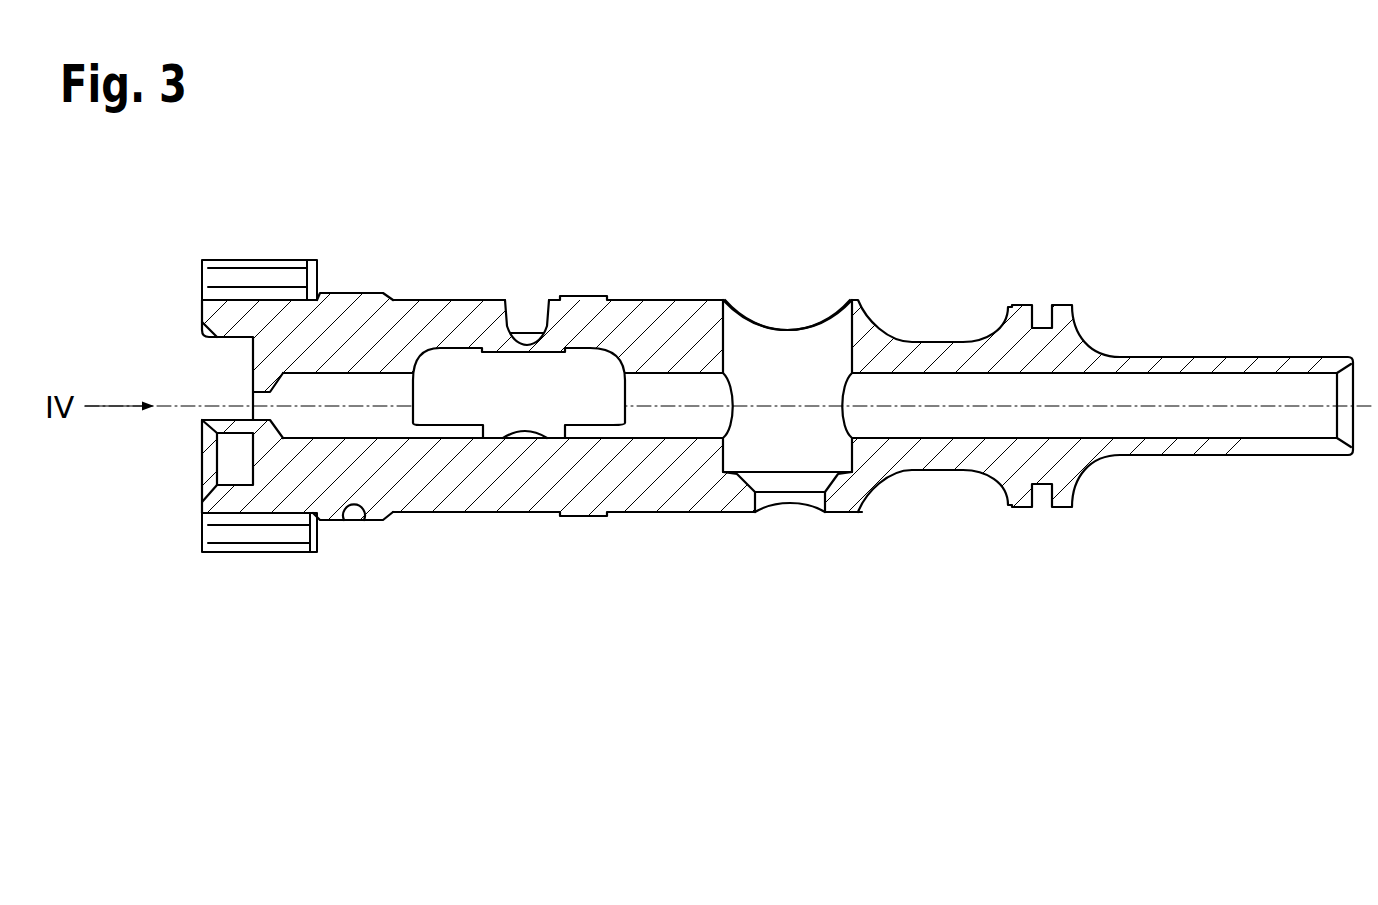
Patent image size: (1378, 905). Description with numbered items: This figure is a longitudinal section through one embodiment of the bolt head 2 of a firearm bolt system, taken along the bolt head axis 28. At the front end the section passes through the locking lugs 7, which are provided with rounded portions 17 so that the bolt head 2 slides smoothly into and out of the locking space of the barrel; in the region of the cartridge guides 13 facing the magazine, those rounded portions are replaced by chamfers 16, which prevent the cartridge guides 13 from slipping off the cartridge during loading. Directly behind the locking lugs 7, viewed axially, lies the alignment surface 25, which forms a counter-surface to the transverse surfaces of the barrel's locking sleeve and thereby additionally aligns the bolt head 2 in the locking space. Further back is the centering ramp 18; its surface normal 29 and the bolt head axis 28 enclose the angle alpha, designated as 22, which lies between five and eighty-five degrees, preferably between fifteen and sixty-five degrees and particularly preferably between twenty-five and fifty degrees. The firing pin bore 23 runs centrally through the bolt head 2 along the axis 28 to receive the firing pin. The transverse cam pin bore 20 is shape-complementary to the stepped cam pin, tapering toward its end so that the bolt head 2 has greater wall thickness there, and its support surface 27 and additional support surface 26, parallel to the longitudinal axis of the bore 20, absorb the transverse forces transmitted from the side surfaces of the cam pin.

The bolt head 2 is at (652, 338).
The locking lugs 7 is at (238, 260).
The cartridge guides 13 is at (202, 532).
The chamfers 16 is at (203, 553).
The rounded portions 17 is at (202, 275).
The centering ramp 18 is at (397, 357).
The cam pin bore 20 is at (778, 348).
The angle alpha 22 is at (392, 396).
The firing pin bore 23 is at (967, 390).
The alignment surface 25 is at (257, 385).
The additional support surface 26 is at (826, 500).
The support surface 27 is at (858, 452).
The bolt head axis 28 is at (1277, 402).
The surface normal 29 is at (527, 478).